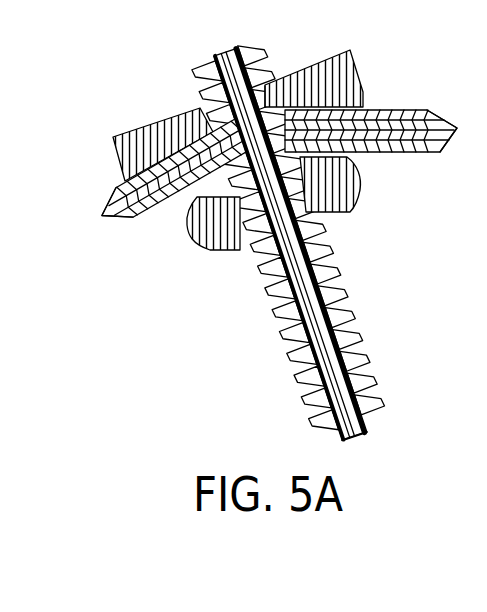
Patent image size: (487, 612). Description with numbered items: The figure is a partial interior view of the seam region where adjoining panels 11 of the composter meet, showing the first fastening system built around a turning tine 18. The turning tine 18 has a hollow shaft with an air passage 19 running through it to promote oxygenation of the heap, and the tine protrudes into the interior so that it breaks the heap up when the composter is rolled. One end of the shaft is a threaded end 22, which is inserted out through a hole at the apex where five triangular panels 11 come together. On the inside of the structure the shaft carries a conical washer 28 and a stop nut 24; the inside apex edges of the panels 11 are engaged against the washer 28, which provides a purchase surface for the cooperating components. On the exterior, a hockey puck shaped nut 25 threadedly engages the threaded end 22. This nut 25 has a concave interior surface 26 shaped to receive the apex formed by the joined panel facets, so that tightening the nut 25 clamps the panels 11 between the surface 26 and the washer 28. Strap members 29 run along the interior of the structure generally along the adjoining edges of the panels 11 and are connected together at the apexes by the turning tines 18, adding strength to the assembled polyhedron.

The panels 11 is at (95, 210).
The turning tines 18 is at (398, 342).
The air passage 19 is at (355, 436).
The threaded end 22 is at (243, 53).
The stop nut 24 is at (346, 194).
The hockey puck shaped nut 25 is at (140, 131).
The concave interior surface 26 is at (265, 86).
The conical washer 28 is at (168, 225).
The strap members 29 is at (437, 137).